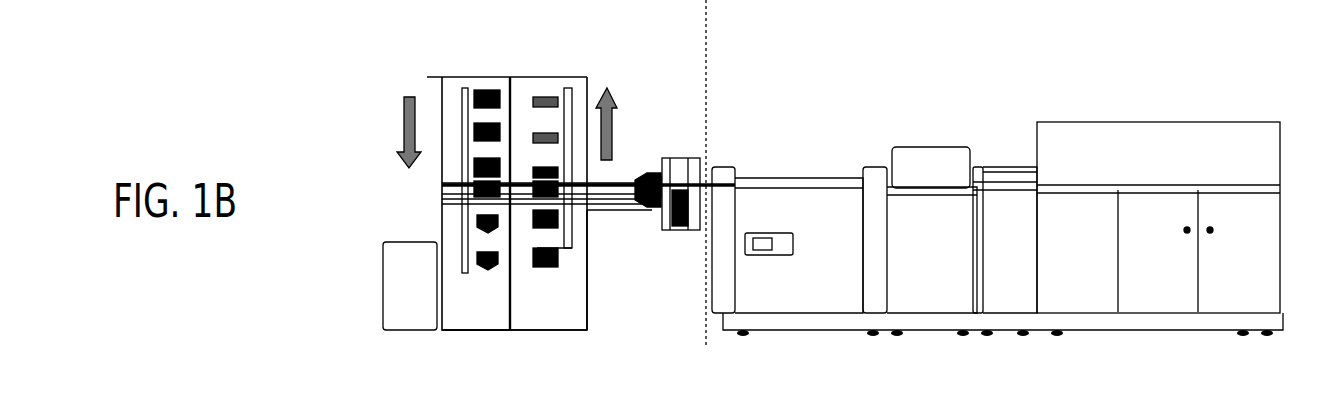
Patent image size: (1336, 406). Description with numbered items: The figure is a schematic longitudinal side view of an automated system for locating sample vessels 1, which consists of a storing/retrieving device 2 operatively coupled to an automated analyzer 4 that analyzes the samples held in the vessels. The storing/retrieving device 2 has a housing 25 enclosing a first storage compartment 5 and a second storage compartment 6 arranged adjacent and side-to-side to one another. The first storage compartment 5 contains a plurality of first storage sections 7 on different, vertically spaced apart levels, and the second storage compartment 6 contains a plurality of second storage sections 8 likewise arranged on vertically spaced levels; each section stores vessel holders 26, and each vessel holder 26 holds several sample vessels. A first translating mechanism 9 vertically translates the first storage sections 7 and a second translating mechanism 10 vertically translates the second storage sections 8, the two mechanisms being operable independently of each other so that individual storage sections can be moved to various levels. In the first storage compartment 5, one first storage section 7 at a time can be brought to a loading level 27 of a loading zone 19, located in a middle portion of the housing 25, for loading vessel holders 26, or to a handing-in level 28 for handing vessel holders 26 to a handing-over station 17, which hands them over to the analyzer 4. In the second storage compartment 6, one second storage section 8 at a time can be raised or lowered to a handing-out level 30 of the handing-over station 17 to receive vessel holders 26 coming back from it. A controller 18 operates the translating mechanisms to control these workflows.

The automated system for locating sample vessels 1 is at (333, 97).
The storing/retrieving device 2 is at (548, 58).
The automated analyzer 4 is at (827, 172).
The first storage compartment 5 is at (573, 278).
The second storage compartment 6 is at (458, 308).
The first storage sections 7 is at (556, 129).
The second storage sections 8 is at (488, 221).
The first translating mechanism 9 is at (567, 215).
The second translating mechanism 10 is at (463, 93).
The handing-over station 17 is at (678, 158).
The controller 18 is at (392, 313).
The loading zone 19 is at (437, 178).
The housing 25 is at (490, 330).
The vessel holders 26 is at (477, 88).
The loading level 27 is at (437, 183).
The handing-in level 28 is at (640, 200).
The handing-out level 30 is at (658, 187).